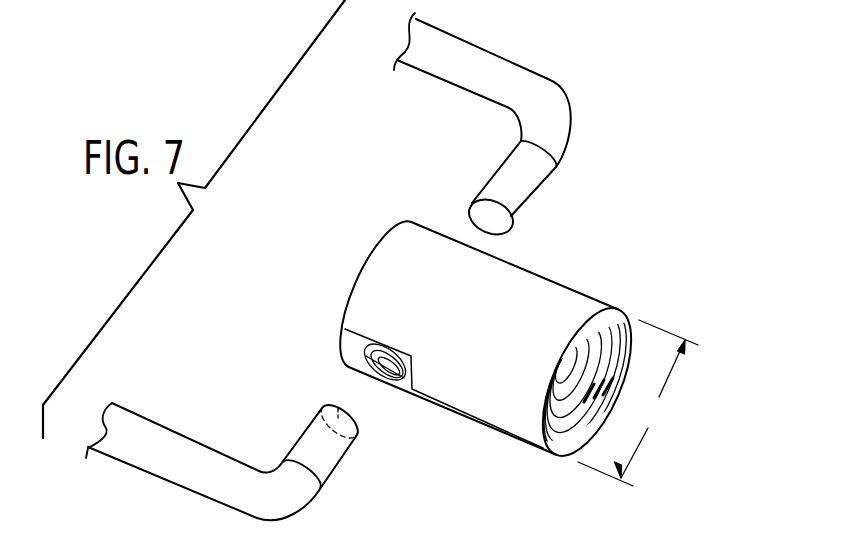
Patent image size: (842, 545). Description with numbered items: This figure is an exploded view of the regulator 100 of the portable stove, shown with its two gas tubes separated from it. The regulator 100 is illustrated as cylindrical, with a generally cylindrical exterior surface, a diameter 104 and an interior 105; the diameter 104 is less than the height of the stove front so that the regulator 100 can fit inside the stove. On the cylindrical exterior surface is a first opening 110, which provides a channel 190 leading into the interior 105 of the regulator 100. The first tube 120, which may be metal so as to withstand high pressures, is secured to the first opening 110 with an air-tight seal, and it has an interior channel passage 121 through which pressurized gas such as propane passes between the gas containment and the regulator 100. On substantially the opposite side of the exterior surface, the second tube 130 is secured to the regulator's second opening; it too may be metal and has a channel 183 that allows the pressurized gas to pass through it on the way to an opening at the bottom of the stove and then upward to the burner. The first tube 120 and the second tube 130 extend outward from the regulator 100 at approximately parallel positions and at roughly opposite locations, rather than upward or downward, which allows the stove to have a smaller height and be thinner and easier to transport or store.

The regulator 100 is at (401, 256).
The diameter 104 is at (638, 403).
The interior 105 is at (603, 330).
The first opening 110 is at (406, 392).
The first tube 120 is at (178, 474).
The interior channel passage 121 is at (337, 399).
The second tube 130 is at (532, 182).
The channel 183 is at (485, 218).
The channel 190 is at (357, 371).